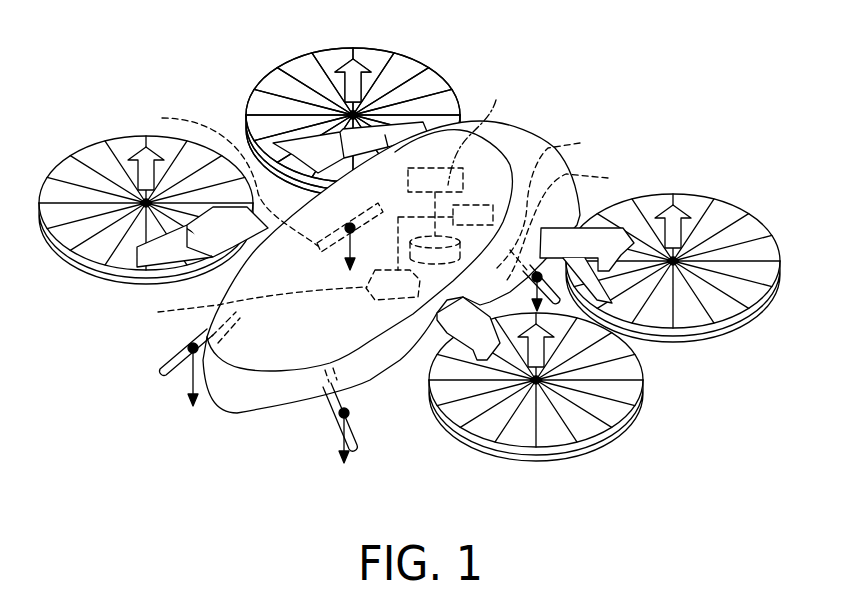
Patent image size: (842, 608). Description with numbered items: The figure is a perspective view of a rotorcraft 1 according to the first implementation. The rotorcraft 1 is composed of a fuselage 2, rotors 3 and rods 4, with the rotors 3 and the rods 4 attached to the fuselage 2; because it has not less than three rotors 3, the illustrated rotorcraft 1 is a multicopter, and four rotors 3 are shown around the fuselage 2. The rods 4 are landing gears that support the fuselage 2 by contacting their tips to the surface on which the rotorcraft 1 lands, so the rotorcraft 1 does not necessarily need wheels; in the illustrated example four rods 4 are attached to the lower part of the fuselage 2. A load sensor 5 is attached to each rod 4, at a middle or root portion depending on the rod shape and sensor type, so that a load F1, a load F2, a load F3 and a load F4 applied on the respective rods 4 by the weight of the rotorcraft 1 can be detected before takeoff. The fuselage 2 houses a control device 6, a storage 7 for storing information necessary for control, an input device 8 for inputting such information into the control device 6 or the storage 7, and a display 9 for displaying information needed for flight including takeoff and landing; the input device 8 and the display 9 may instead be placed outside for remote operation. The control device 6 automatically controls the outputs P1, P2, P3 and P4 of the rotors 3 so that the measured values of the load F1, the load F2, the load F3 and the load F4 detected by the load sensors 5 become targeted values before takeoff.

The rotorcraft 1 is at (409, 243).
The fuselage 2 is at (533, 133).
The rotor 3 is at (412, 65).
The rod 4 is at (340, 402).
The load sensor 5 is at (355, 415).
The control device 6 is at (540, 222).
The storage 7 is at (477, 131).
The input device 8 is at (501, 197).
The display 9 is at (251, 309).
The output of rotor P1 is at (645, 380).
The output of rotor P2 is at (145, 172).
The output of rotor P3 is at (690, 232).
The output of rotor P4 is at (352, 92).
The load F1 is at (343, 443).
The load F2 is at (198, 383).
The load F3 is at (695, 345).
The load F4 is at (252, 178).